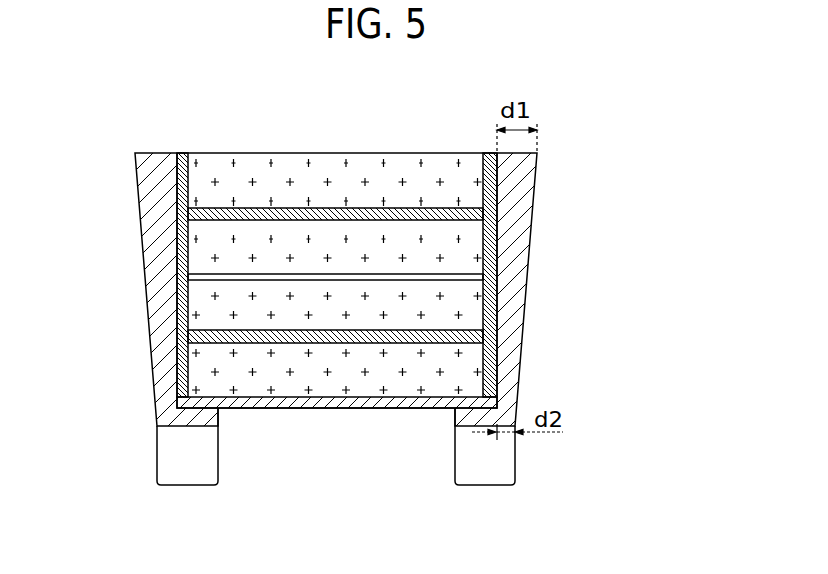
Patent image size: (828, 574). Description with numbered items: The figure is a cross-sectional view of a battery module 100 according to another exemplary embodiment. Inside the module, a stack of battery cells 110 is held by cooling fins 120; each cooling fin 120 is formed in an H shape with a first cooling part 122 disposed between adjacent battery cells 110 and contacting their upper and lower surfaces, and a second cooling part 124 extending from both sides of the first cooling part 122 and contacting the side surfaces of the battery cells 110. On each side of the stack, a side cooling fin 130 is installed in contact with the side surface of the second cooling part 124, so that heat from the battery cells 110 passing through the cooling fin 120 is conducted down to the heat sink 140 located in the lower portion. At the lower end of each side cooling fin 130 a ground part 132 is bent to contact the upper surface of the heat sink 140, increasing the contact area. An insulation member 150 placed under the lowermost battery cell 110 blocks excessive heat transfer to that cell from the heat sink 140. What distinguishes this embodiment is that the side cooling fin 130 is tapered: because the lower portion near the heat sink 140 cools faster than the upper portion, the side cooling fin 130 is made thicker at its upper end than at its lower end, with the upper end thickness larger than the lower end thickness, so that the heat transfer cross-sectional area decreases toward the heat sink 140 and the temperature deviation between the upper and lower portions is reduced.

The battery module 100 is at (424, 105).
The battery cell 110 is at (470, 182).
The cooling fin 120 is at (427, 275).
The first cooling part 122 is at (439, 221).
The second cooling part 124 is at (494, 194).
The side cooling fin 130 is at (510, 325).
The ground part 132 is at (198, 415).
The heat sink 140 is at (182, 470).
The insulation member 150 is at (348, 406).